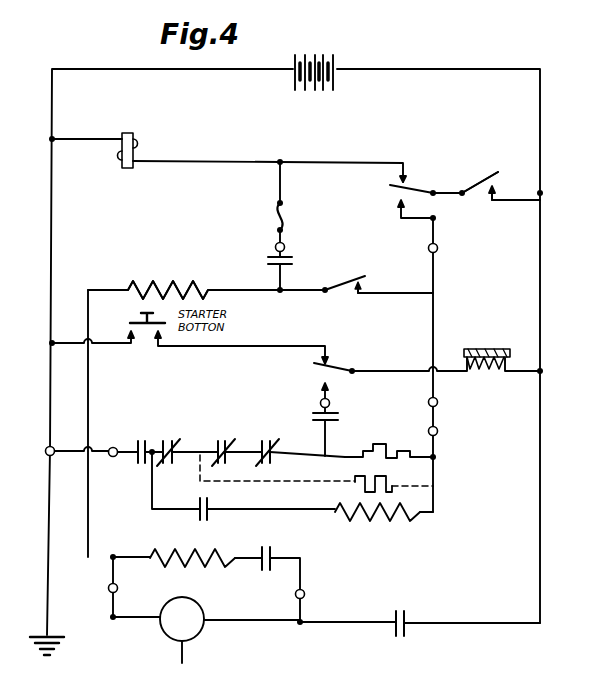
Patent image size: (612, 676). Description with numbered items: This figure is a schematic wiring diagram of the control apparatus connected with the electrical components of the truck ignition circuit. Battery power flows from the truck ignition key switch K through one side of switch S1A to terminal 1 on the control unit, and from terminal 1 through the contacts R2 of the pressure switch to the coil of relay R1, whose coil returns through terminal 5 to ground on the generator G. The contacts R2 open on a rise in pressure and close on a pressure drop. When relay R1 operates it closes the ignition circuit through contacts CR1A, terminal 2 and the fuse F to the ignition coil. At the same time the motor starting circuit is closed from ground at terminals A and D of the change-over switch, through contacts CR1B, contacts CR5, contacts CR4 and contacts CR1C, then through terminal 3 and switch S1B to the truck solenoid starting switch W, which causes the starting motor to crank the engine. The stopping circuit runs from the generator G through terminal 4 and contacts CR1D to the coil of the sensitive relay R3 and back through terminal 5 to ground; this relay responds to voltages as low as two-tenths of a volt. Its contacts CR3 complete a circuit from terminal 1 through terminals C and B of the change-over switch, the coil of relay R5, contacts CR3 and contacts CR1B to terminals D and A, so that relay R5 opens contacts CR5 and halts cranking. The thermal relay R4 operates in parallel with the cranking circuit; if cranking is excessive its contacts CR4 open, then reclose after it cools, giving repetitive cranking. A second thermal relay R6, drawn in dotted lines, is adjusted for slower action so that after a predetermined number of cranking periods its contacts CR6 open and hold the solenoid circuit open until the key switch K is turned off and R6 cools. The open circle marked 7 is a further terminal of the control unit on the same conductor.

The terminal 1 is at (135, 140).
The fuse F is at (283, 220).
The terminal 2 is at (286, 249).
The contacts CR1A is at (257, 273).
The switch S1A is at (444, 172).
The truck ignition key switch K is at (481, 173).
The terminal 7 is at (438, 250).
The relay R1 is at (190, 284).
The contacts of pressure switch R2 is at (355, 280).
The switch S1B is at (341, 358).
The solenoid starting switch W is at (498, 349).
The terminal 3 is at (331, 404).
The contacts CR1C is at (334, 424).
The terminal of change-over switch C is at (439, 404).
The terminal of change-over switch B is at (439, 432).
The terminal of change-over switch A is at (46, 449).
The terminal of change-over switch D is at (113, 447).
The contacts CR1B is at (140, 440).
The contacts CR5 is at (168, 463).
The contacts CR6 is at (228, 443).
The contacts CR4 is at (278, 455).
The thermal relay R4 is at (376, 452).
The thermal relay R6 is at (395, 482).
The contacts CR3 is at (212, 512).
The relay R5 is at (380, 516).
The sensitive relay R3 is at (192, 550).
The contacts CR1D is at (276, 560).
The terminal 4 is at (305, 596).
The terminal 5 is at (118, 590).
The generator G is at (200, 609).